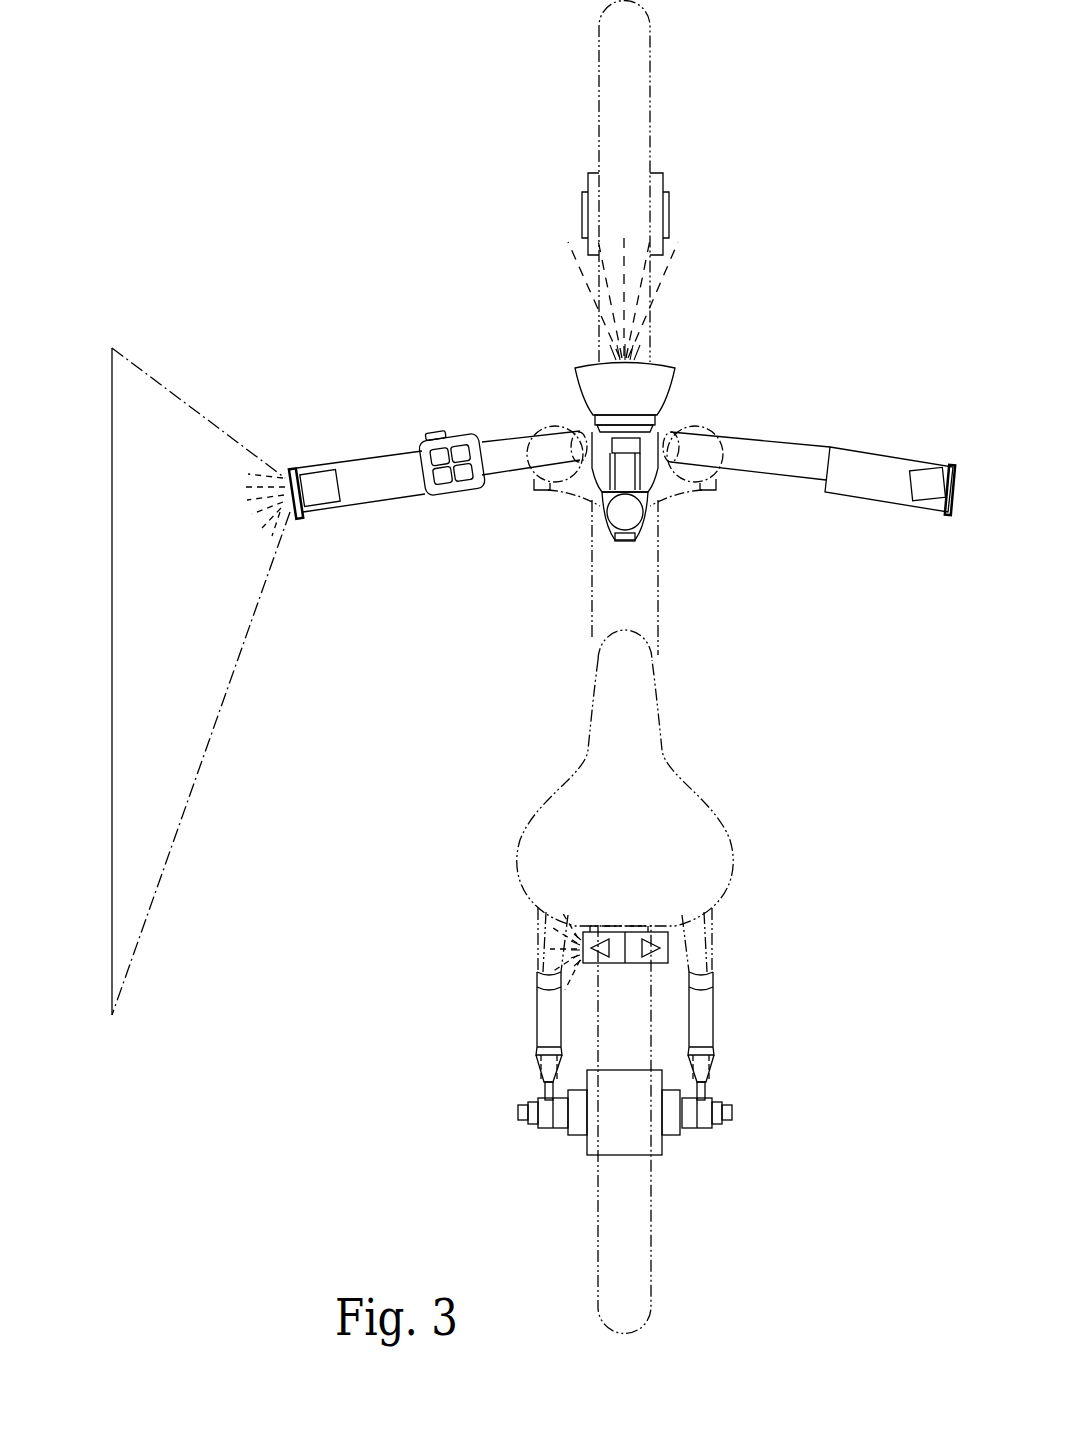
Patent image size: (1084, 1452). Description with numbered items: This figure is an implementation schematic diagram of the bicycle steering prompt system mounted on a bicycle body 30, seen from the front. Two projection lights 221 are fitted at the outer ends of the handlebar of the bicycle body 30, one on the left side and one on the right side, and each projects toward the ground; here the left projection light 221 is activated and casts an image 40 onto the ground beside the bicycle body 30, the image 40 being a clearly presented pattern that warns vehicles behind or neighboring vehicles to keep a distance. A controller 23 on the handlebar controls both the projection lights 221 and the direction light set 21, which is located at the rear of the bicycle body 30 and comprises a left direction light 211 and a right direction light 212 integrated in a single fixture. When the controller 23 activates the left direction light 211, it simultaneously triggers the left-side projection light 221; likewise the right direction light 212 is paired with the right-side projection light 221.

The bicycle body 30 is at (750, 428).
The projection light 221 is at (320, 472).
The controller 23 is at (452, 494).
The image 40 is at (112, 655).
The direction light set 21 is at (629, 931).
The left direction light 211 is at (614, 964).
The right direction light 212 is at (636, 963).